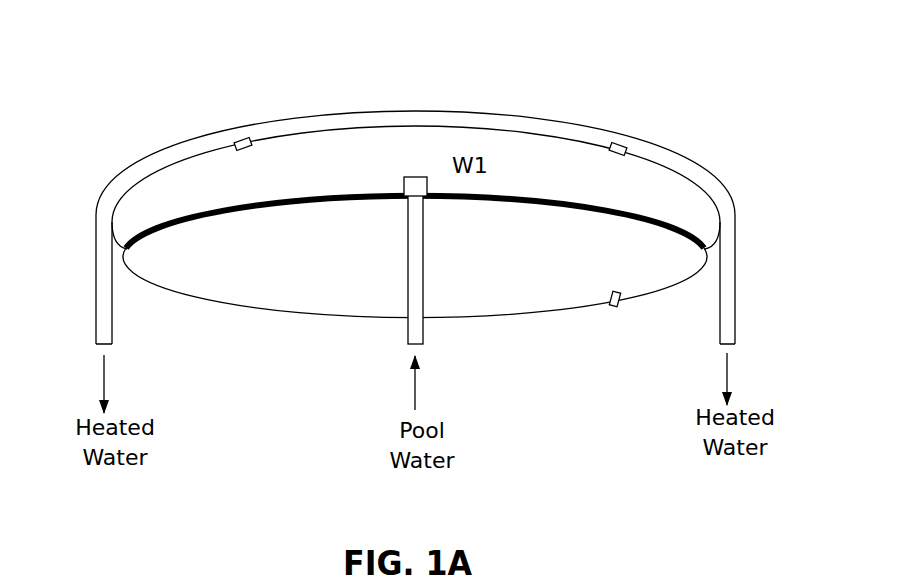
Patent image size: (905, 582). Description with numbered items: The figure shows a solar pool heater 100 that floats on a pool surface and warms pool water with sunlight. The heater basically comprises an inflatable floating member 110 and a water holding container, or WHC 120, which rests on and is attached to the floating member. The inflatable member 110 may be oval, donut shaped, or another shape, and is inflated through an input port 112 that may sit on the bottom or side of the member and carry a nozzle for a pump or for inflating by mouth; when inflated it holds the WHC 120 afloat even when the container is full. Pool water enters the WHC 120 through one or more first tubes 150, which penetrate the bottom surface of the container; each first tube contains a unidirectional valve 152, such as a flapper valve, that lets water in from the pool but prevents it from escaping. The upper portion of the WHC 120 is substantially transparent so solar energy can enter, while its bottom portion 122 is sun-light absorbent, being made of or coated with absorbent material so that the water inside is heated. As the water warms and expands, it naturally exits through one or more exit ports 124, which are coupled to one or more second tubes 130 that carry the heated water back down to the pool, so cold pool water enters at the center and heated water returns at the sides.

The solar pool heater 100 is at (613, 46).
The inflatable floating member 110 is at (230, 291).
The input port 112 is at (617, 311).
The WHC (water holding container) 120 is at (567, 181).
The bottom portion 122 is at (480, 207).
The exit ports 124 is at (242, 136).
The second tubes 130 is at (427, 110).
The first tubes 150 is at (407, 295).
The unidirectional valve 152 is at (404, 186).